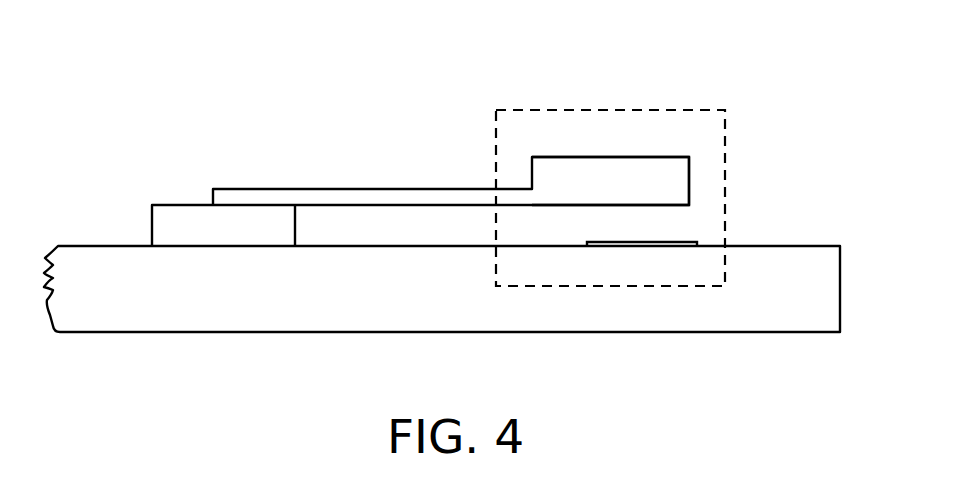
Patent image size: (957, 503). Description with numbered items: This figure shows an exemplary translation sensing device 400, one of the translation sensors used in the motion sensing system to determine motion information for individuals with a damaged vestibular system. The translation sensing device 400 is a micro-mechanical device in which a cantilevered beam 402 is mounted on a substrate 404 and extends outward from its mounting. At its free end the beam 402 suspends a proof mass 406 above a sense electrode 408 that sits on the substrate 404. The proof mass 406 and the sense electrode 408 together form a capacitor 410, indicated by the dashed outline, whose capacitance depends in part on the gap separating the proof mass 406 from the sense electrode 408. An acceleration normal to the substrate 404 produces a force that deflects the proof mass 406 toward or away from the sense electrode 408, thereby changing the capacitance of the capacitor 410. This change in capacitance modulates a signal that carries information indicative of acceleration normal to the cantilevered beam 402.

The translation sensing device 400 is at (648, 192).
The cantilevered beam 402 is at (360, 189).
The substrate 404 is at (304, 315).
The proof mass 406 is at (636, 192).
The sense electrode 408 is at (640, 247).
The capacitor 410 is at (725, 148).